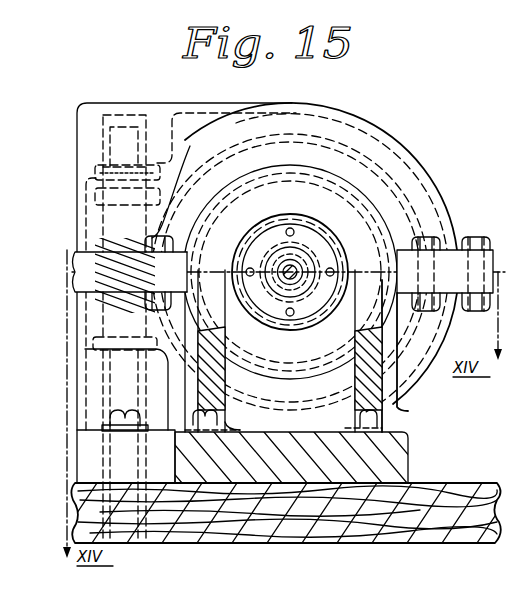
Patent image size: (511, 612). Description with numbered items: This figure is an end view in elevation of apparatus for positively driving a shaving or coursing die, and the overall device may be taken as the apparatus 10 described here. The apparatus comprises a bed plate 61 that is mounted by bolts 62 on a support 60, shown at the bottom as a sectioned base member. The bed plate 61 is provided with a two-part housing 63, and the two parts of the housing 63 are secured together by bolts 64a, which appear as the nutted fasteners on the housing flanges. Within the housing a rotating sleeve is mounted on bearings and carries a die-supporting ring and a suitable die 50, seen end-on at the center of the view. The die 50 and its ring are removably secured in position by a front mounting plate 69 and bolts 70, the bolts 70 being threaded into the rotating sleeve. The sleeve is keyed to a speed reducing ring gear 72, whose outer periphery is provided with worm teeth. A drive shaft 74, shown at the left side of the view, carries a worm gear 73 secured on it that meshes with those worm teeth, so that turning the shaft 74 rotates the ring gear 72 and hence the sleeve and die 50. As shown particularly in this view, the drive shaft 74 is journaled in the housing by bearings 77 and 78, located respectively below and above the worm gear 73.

The pulley 10 is at (285, 265).
The die 50 is at (300, 266).
The support 60 is at (509, 74).
The bed plate 61 is at (408, 445).
The bolts 62 is at (118, 415).
The two-part housing 63 is at (421, 164).
The bolts 64a is at (467, 237).
The front mounting plate 69 is at (265, 293).
The bolts 70 is at (291, 316).
The ring gear 72 is at (341, 140).
The worm gear 73 is at (110, 247).
The shaft 74 is at (121, 124).
The bearing 77 is at (100, 399).
The bearing 78 is at (150, 132).